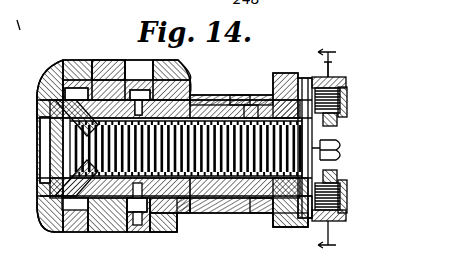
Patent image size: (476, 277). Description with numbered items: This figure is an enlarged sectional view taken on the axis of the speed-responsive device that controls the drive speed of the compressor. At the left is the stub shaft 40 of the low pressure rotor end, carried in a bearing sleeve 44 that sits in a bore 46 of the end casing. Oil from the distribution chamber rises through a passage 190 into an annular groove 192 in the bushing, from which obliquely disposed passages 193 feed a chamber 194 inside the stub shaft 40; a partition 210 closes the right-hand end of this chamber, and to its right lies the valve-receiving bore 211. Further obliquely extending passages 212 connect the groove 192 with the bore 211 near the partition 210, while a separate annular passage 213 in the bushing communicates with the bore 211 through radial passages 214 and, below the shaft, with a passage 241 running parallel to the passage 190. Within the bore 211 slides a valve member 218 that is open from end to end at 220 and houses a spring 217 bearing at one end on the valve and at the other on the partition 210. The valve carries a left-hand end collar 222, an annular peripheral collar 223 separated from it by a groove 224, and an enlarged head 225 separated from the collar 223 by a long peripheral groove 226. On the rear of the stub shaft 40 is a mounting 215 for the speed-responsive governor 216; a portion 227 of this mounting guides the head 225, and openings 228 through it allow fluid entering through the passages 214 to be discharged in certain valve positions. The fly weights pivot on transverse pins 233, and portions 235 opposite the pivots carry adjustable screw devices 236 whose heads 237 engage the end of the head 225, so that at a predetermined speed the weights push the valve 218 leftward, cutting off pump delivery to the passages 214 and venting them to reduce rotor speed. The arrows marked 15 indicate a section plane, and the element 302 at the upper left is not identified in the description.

The section line 15 is at (331, 152).
The stub shaft 40 is at (57, 115).
The bearing sleeve 44 is at (178, 215).
The bore 46 is at (45, 77).
The passage 190 is at (76, 211).
The annular groove 192 is at (72, 90).
The obliquely disposed passages 193 is at (45, 111).
The chamber 194 is at (40, 173).
The partition 210 is at (62, 150).
The valve-receiving bore 211 is at (193, 98).
The obliquely extending passages 212 is at (57, 227).
The annular passage 213 is at (134, 212).
The radial passages 214 is at (180, 80).
The mounting 215 is at (238, 96).
The speed-responsive governor 216 is at (286, 84).
The spring 217 is at (258, 214).
The valve member 218 is at (209, 196).
The open end-to-end passage 220 is at (338, 150).
The left-hand end collar 222 is at (38, 99).
The annular peripheral collar 223 is at (140, 112).
The groove 224 is at (103, 108).
The head 225 is at (305, 95).
The peripheral groove 226 is at (250, 120).
The portion of support member 227 is at (303, 206).
The openings 228 is at (298, 223).
The transverse pins 233 is at (340, 64).
The portions of the fly weights 235 is at (342, 101).
The adjustable screw devices 236 is at (333, 73).
The heads 237 is at (336, 124).
The passage 241 is at (156, 230).
The housing 302 is at (11, 19).